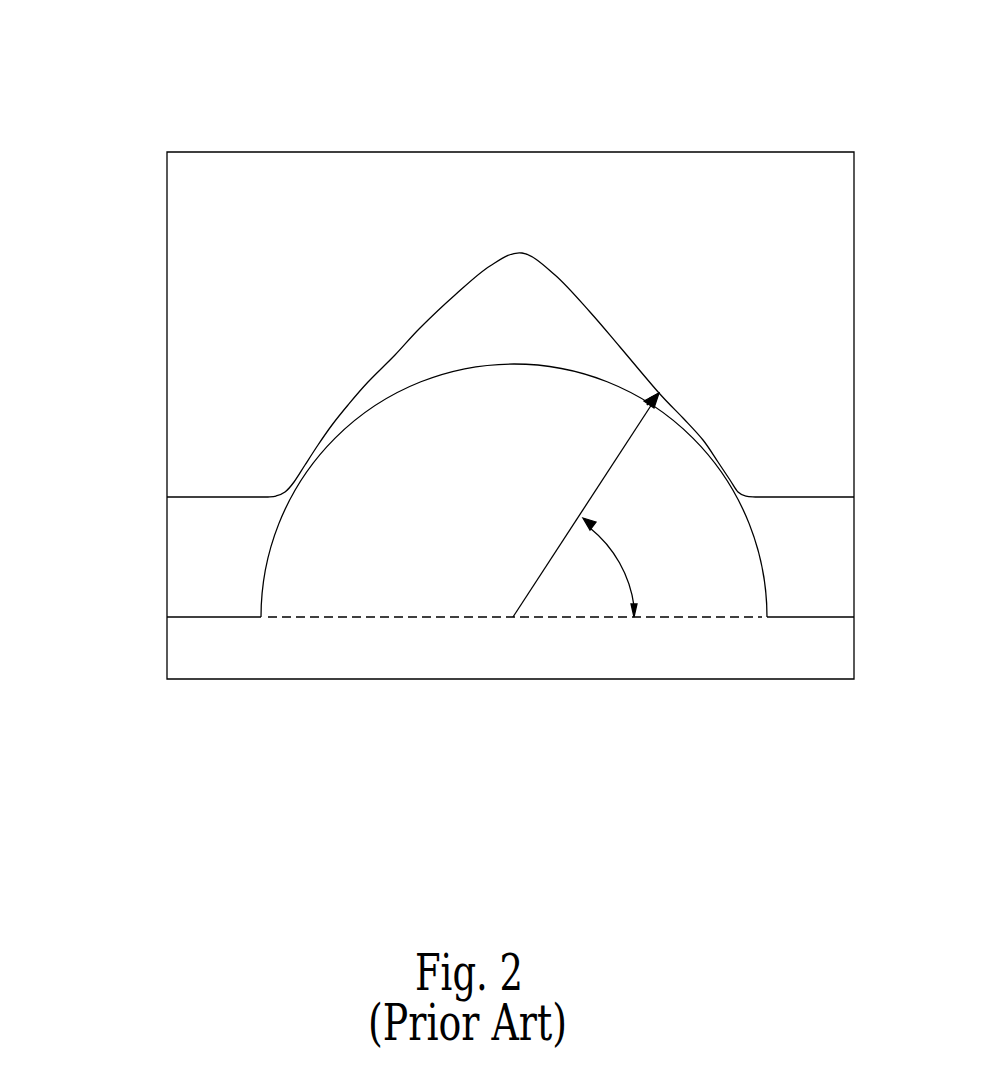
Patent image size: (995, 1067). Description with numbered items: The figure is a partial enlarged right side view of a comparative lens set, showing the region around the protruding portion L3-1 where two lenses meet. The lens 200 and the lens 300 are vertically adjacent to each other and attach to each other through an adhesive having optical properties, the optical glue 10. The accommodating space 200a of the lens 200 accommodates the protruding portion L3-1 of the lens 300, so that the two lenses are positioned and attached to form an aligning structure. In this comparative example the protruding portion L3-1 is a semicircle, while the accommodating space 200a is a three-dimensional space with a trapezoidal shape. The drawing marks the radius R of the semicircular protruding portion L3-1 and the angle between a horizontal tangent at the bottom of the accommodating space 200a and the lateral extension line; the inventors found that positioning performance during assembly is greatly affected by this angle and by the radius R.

The lens 200 is at (241, 212).
The accommodating space 200a is at (522, 280).
The optical glue 10 is at (190, 570).
The lens 300 is at (185, 660).
The protruding portion L3-1 is at (438, 582).
The radius R is at (586, 505).